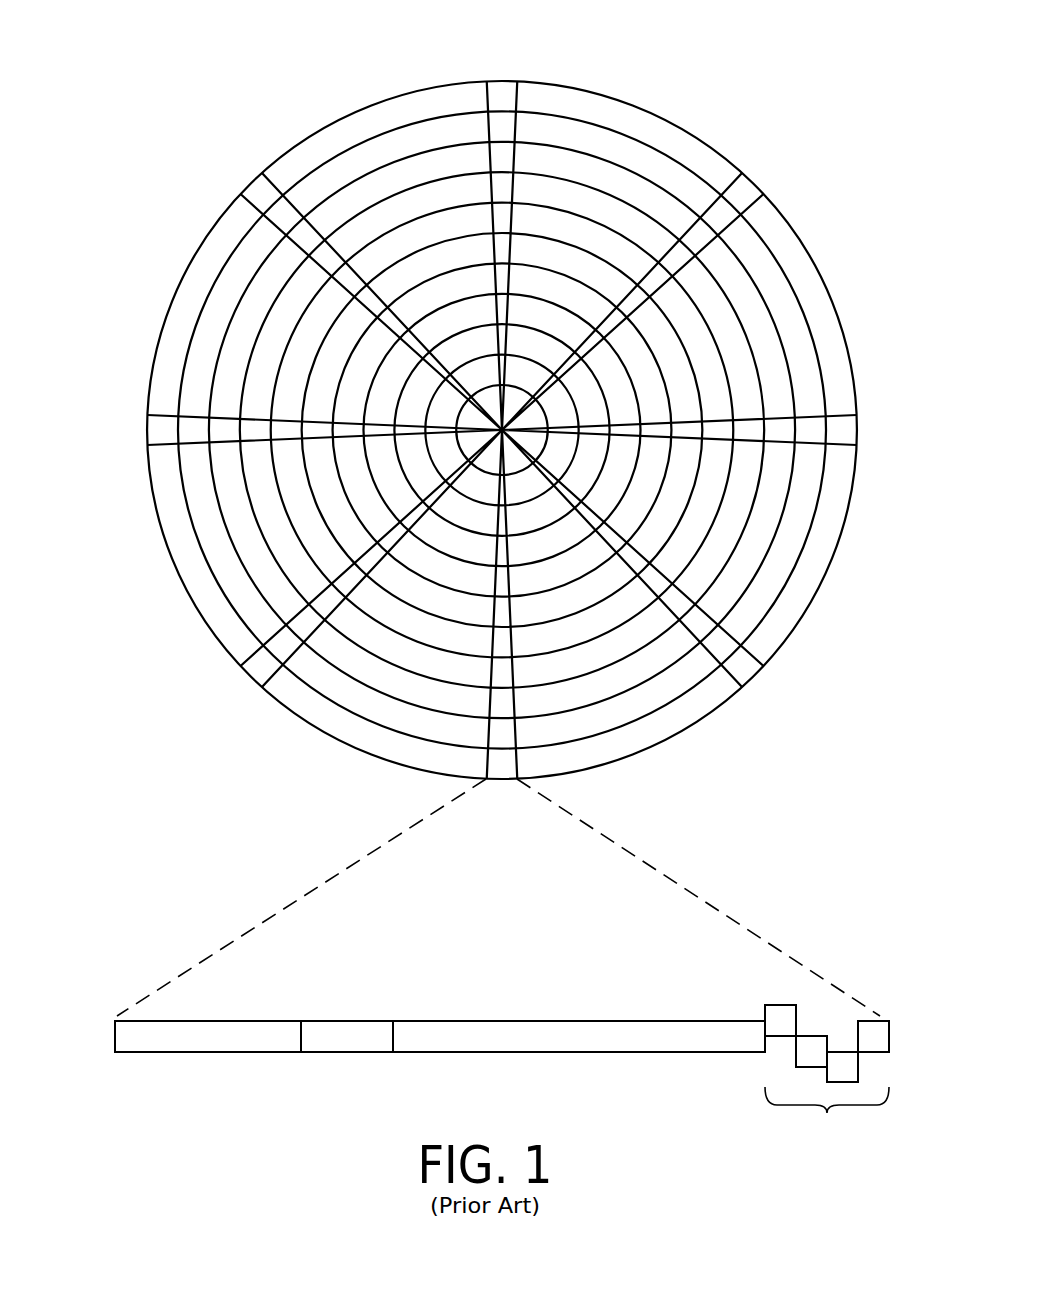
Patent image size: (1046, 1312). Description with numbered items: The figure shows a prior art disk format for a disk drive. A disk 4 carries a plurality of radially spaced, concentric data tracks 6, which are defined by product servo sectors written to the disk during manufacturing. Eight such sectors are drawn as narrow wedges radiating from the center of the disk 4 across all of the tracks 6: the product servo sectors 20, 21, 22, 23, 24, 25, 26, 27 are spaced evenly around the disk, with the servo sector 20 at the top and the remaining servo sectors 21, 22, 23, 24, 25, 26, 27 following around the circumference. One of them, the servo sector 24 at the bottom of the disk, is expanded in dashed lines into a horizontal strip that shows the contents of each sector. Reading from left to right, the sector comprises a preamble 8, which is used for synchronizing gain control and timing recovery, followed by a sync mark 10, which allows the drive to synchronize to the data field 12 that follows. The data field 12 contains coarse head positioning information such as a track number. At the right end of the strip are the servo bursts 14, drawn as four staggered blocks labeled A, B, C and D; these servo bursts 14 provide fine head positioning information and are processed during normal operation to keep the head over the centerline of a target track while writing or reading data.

The disk 4 is at (503, 440).
The data tracks 6 is at (624, 147).
The product servo sector 20 is at (505, 84).
The product servo sector 21 is at (745, 192).
The product servo sector 22 is at (848, 432).
The product servo sector 23 is at (748, 672).
The product servo sector 24 is at (341, 853).
The product servo sector 25 is at (257, 672).
The product servo sector 26 is at (152, 428).
The product servo sector 27 is at (349, 277).
The servo bursts 14 is at (505, 1042).
The preamble 8 is at (187, 1054).
The sync mark 10 is at (344, 1054).
The data field 12 is at (568, 1054).